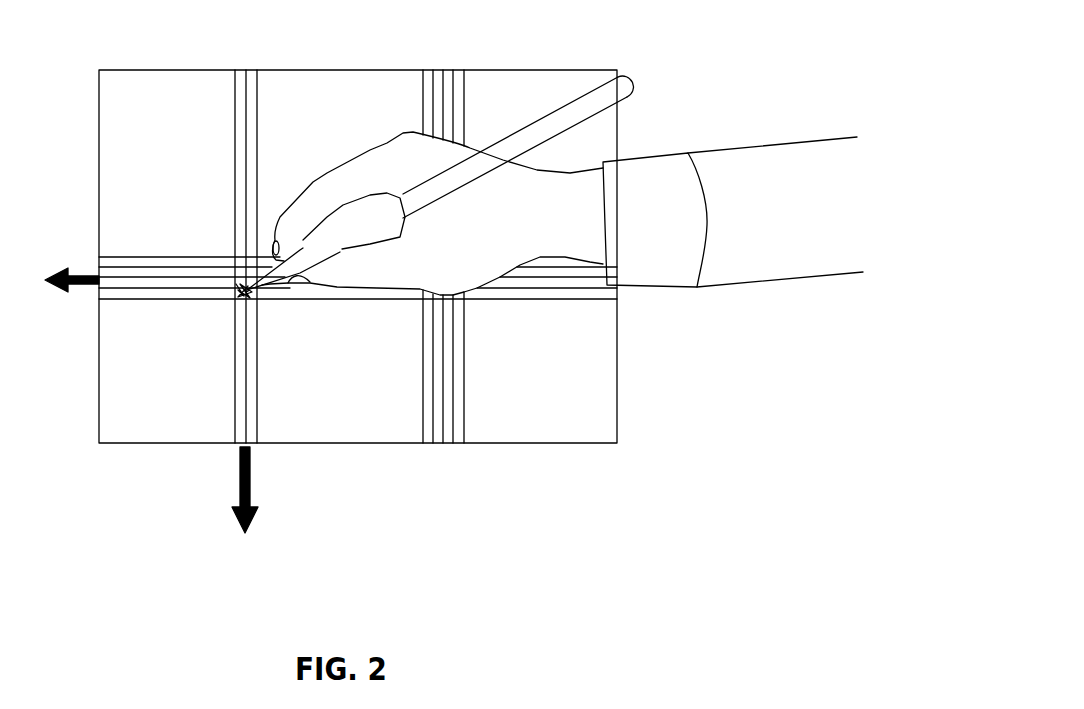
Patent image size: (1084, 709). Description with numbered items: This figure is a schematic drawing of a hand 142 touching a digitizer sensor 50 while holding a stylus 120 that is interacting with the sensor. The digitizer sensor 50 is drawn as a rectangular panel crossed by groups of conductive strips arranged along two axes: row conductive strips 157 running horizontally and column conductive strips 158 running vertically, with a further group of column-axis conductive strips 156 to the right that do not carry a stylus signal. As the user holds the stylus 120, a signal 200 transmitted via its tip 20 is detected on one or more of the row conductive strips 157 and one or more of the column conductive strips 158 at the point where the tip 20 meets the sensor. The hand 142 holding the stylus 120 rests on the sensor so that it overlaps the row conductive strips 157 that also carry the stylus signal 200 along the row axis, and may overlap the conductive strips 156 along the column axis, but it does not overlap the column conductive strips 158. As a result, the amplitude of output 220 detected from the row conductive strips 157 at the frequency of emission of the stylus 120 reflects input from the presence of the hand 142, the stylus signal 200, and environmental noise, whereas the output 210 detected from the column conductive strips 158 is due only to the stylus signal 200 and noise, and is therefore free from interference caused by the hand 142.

The tip 20 is at (247, 290).
The digitizer sensor 50 is at (617, 382).
The stylus 120 is at (517, 142).
The hand 142 is at (367, 187).
The conductive strips 156 is at (455, 382).
The row conductive strips 157 is at (188, 277).
The column conductive strips 158 is at (257, 145).
The signal 200 is at (240, 300).
The output 210 is at (250, 476).
The output 220 is at (78, 274).